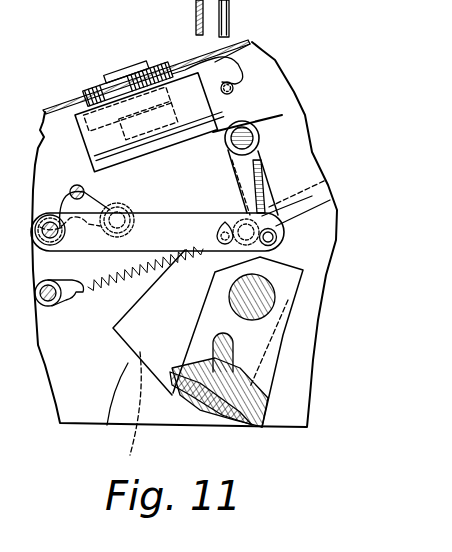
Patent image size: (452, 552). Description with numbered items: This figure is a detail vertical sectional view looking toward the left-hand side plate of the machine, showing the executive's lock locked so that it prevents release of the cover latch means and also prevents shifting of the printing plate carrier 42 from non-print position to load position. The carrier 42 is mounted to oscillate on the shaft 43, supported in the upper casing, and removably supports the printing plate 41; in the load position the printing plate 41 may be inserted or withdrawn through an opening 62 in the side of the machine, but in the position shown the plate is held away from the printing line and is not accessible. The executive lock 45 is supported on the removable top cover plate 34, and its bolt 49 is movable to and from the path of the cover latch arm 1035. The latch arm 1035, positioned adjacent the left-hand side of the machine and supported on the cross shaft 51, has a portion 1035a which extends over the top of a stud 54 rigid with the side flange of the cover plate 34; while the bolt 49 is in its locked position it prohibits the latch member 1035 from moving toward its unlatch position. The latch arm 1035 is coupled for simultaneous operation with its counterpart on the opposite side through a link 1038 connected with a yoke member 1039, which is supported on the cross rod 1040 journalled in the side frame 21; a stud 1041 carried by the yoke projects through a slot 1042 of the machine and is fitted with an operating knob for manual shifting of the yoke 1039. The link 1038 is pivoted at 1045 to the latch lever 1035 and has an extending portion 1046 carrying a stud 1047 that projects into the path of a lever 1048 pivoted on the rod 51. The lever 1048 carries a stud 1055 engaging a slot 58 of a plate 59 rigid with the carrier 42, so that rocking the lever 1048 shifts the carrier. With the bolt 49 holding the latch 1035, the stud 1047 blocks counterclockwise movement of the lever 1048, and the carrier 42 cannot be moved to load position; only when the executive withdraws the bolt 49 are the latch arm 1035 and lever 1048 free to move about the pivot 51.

The side frame 21 is at (73, 422).
The top cover plate 34 is at (50, 110).
The executive lock 45 is at (125, 68).
The bolt 49 is at (78, 110).
The portion of latch member 1035a is at (235, 60).
The stud 54 is at (234, 86).
The cross shaft 51 is at (251, 165).
The cover latch arm 1035 is at (262, 160).
The lever 1048 is at (298, 190).
The stud 1055 is at (313, 178).
The extending portion 1046 is at (279, 223).
The stud 1047 is at (277, 237).
The slot 58 is at (276, 248).
The shaft 43 is at (262, 305).
The printing plate carrier 42 is at (265, 386).
The printing plate 41 is at (252, 424).
The opening 62 is at (143, 409).
The plate 59 is at (140, 356).
The link 1038 is at (125, 247).
The yoke member 1039 is at (53, 243).
The pivot 1045 is at (217, 250).
The slot 1042 is at (128, 172).
The cross rod 1040 is at (83, 192).
The stud 1041 is at (128, 208).